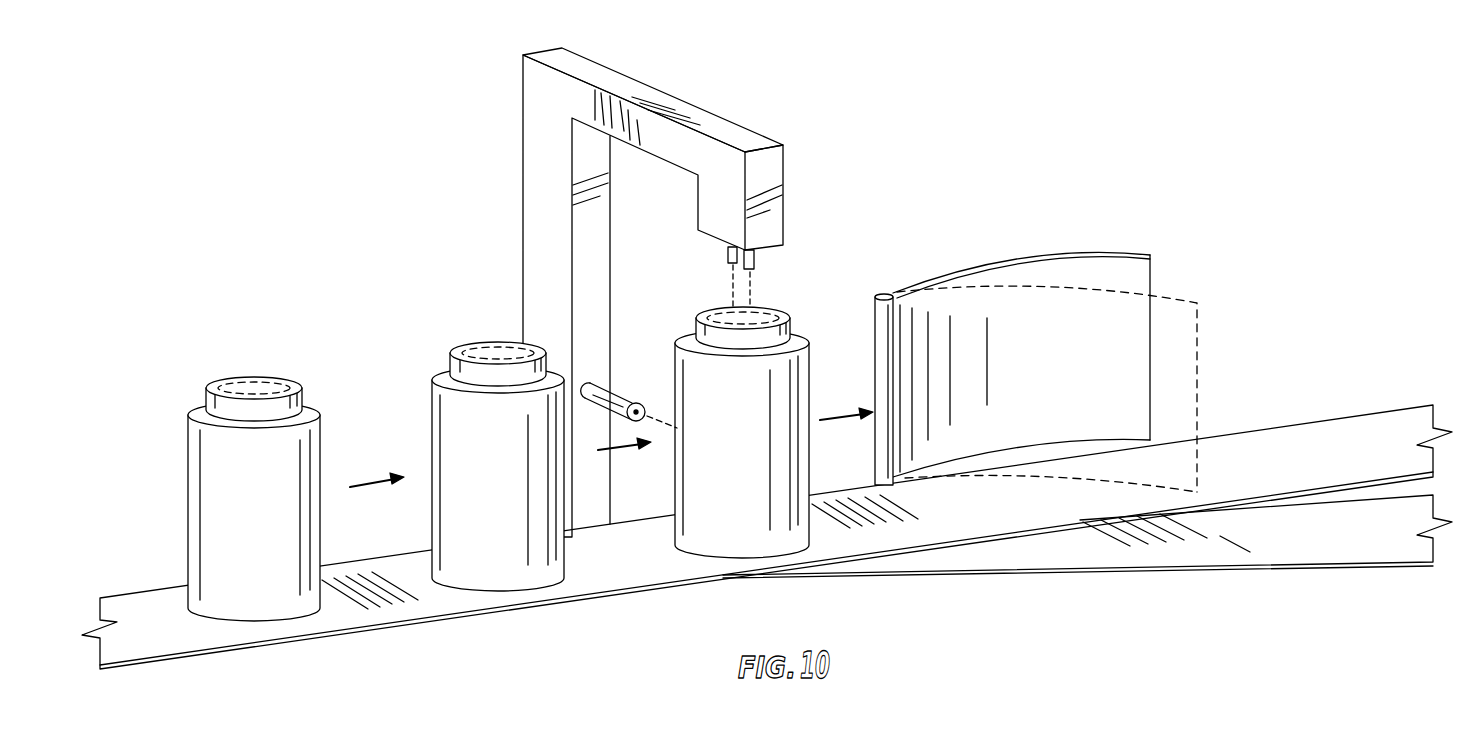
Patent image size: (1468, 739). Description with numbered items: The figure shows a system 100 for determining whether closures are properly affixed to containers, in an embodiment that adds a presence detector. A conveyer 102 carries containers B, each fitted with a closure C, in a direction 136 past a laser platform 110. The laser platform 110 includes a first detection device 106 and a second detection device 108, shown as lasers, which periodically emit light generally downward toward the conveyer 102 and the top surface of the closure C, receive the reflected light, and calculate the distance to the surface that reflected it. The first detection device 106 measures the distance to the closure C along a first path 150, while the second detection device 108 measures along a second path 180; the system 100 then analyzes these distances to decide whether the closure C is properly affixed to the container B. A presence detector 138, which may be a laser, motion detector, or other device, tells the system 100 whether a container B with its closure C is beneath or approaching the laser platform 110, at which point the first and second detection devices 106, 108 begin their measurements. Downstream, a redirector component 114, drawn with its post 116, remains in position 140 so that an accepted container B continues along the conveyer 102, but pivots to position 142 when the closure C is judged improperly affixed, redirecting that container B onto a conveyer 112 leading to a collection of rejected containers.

The system 100 is at (366, 72).
The conveyer 102 is at (158, 663).
The first detection device 106 is at (726, 258).
The second detection device 108 is at (756, 262).
The laser platform 110 is at (772, 250).
The conveyer 112 is at (1347, 565).
The redirector component 114 is at (1104, 254).
The shield post 116 is at (883, 296).
The direction 136 is at (372, 488).
The presence detector 138 is at (622, 395).
The position 140 is at (1150, 256).
The position 142 is at (1197, 304).
The first path 150 is at (467, 348).
The second path 180 is at (505, 358).
The container B is at (190, 462).
The closure C is at (225, 378).